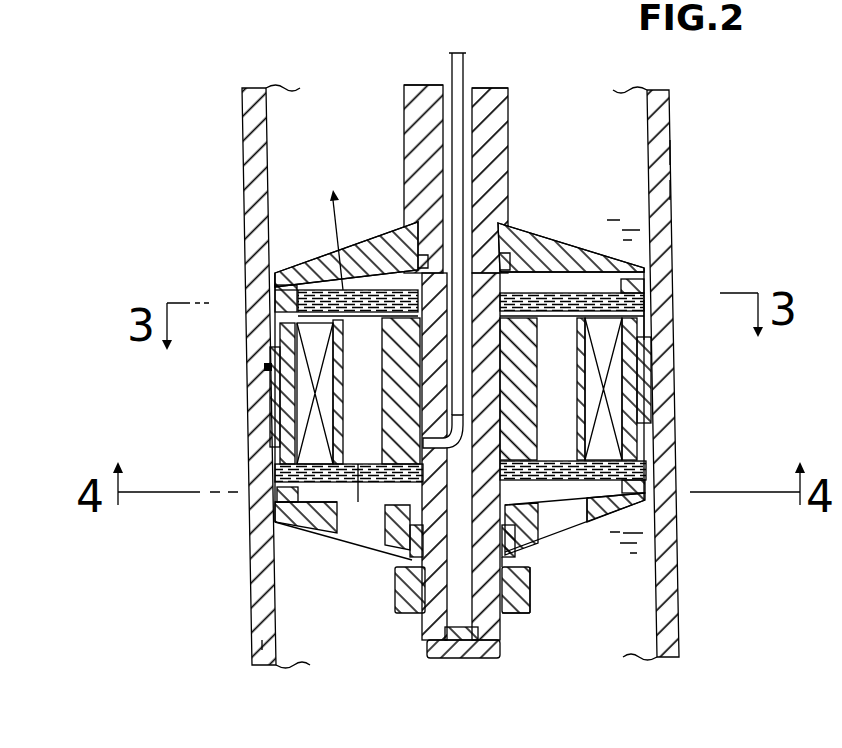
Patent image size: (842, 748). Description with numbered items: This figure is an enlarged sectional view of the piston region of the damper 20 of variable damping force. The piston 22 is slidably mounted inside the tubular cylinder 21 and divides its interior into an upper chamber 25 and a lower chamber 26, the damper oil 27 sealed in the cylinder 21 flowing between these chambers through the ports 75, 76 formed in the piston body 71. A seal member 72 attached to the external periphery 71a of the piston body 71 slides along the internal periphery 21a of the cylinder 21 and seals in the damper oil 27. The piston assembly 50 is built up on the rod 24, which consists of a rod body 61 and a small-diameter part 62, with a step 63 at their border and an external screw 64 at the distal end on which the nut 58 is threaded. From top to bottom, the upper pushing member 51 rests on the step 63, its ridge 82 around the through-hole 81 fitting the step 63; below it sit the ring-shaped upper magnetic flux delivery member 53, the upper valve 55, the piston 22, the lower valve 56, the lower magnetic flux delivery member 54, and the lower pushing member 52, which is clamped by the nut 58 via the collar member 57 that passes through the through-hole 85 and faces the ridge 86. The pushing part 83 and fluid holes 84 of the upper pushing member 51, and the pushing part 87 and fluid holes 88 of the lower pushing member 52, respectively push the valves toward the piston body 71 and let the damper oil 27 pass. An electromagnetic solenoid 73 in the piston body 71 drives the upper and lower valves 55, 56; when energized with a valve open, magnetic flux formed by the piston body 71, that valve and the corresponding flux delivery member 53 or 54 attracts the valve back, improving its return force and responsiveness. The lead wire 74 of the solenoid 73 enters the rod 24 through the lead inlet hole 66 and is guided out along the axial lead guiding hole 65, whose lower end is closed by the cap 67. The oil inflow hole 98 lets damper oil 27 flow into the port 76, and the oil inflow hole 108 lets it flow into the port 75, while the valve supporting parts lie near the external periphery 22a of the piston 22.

The damper of variable damping force 20 is at (165, 58).
The cylinder 21 is at (675, 108).
The internal periphery of the cylinder 21a is at (672, 153).
The piston 22 is at (296, 258).
The external periphery of the piston 22a is at (660, 327).
The rod 24 is at (487, 88).
The upper chamber 25 is at (302, 222).
The lower chamber 26 is at (262, 645).
The damper oil 27 is at (672, 192).
The piston assembly 50 is at (240, 113).
The upper pushing member 51 is at (283, 262).
The lower pushing member 52 is at (300, 530).
The upper magnetic flux delivery member 53 is at (290, 296).
The lower magnetic flux delivery member 54 is at (283, 478).
The upper valve 55 is at (648, 262).
The lower valve 56 is at (625, 528).
The collar member 57 is at (542, 565).
The nut 58 is at (538, 588).
The rod body 61 is at (404, 120).
The small-diameter part 62 is at (652, 352).
The step 63 is at (535, 262).
The external screw 64 is at (430, 642).
The lead guiding hole 65 is at (474, 117).
The lead inlet hole 66 is at (455, 412).
The cap 67 is at (503, 648).
The piston body 71 is at (350, 427).
The external periphery of the piston body 71a is at (283, 492).
The seal member 72 is at (283, 407).
The electromagnetic solenoid 73 is at (268, 369).
The lead wire 74 is at (450, 70).
The port 75 is at (283, 437).
The port 76 is at (565, 437).
The through-hole 81 is at (508, 248).
The ridge 82 is at (425, 252).
The pushing part 83 is at (645, 290).
The fluid holes 84 is at (352, 300).
The through-hole 85 is at (533, 551).
The ridge 86 is at (393, 590).
The pushing part 87 is at (645, 494).
The fluid holes 88 is at (363, 495).
The oil inflow hole 98 is at (618, 282).
The oil inflow hole 108 is at (360, 505).